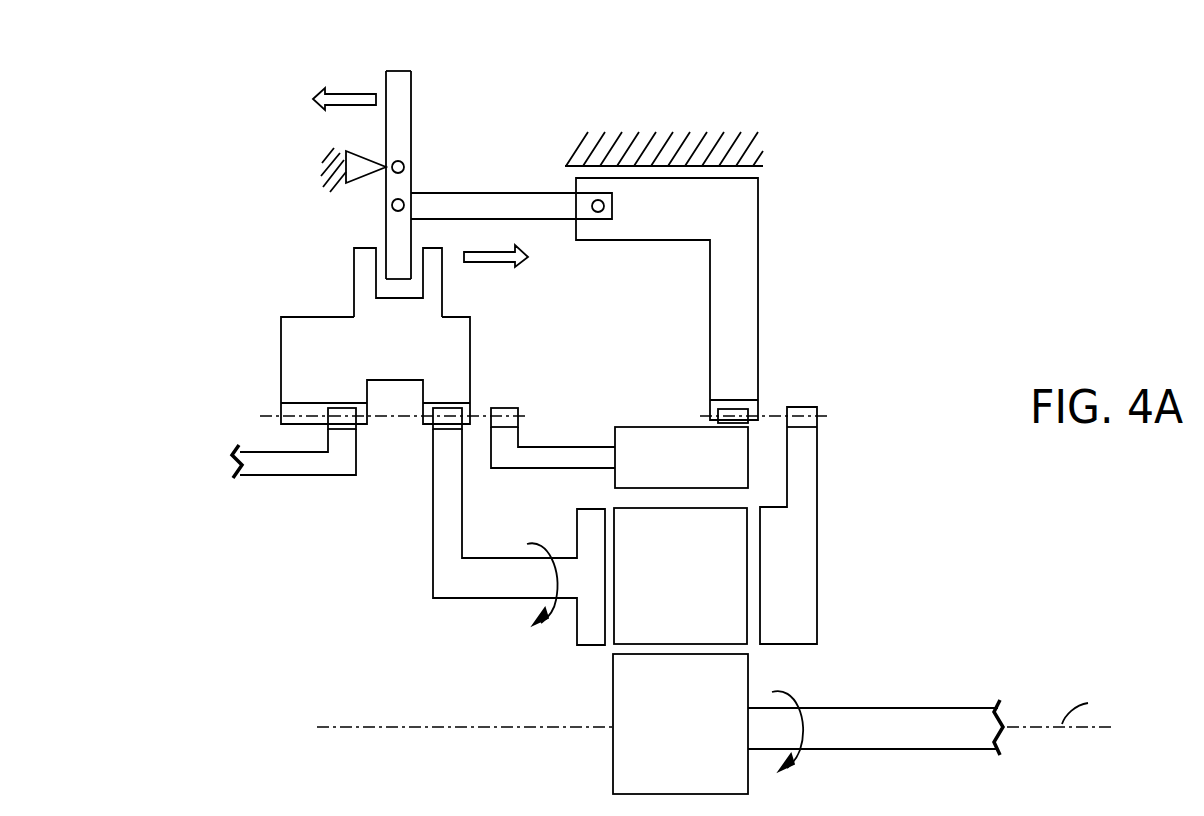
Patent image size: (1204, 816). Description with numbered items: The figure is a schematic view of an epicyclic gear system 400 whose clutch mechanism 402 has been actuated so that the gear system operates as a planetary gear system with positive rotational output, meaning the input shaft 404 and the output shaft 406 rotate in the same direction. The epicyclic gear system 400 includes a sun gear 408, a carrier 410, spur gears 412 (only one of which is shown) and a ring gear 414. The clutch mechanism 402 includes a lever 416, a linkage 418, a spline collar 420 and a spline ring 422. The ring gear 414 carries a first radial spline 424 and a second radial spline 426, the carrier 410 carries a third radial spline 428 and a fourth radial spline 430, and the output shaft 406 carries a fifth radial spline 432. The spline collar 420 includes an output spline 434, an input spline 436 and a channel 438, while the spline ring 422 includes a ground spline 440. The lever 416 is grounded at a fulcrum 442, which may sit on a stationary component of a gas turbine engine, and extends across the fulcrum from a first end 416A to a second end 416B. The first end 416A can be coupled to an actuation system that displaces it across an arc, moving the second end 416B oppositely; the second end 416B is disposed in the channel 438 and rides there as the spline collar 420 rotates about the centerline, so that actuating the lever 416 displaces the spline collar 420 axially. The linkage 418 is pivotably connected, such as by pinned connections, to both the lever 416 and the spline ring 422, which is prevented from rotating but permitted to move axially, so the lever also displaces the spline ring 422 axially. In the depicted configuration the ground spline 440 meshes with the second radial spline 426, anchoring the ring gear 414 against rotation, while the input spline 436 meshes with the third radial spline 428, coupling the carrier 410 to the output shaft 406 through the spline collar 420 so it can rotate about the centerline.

The epicyclic gear system 400 is at (458, 633).
The clutch mechanism 402 is at (765, 244).
The input shaft 404 is at (865, 740).
The output shaft 406 is at (289, 472).
The sun gear 408 is at (699, 739).
The carrier 410 is at (806, 581).
The spur gears 412 is at (700, 585).
The ring gear 414 is at (703, 471).
The lever 416 is at (411, 101).
The first end 416A is at (398, 75).
The second end 416B is at (399, 267).
The linkage 418 is at (467, 193).
The spline collar 420 is at (401, 356).
The spline ring 422 is at (718, 220).
The first radial spline 424 is at (504, 408).
The second radial spline 426 is at (735, 410).
The third radial spline 428 is at (450, 410).
The fourth radial spline 430 is at (803, 407).
The fifth radial spline 432 is at (338, 408).
The output spline 434 is at (303, 423).
The input spline 436 is at (471, 408).
The channel 438 is at (354, 260).
The ground spline 440 is at (710, 413).
The fulcrum 442 is at (360, 149).